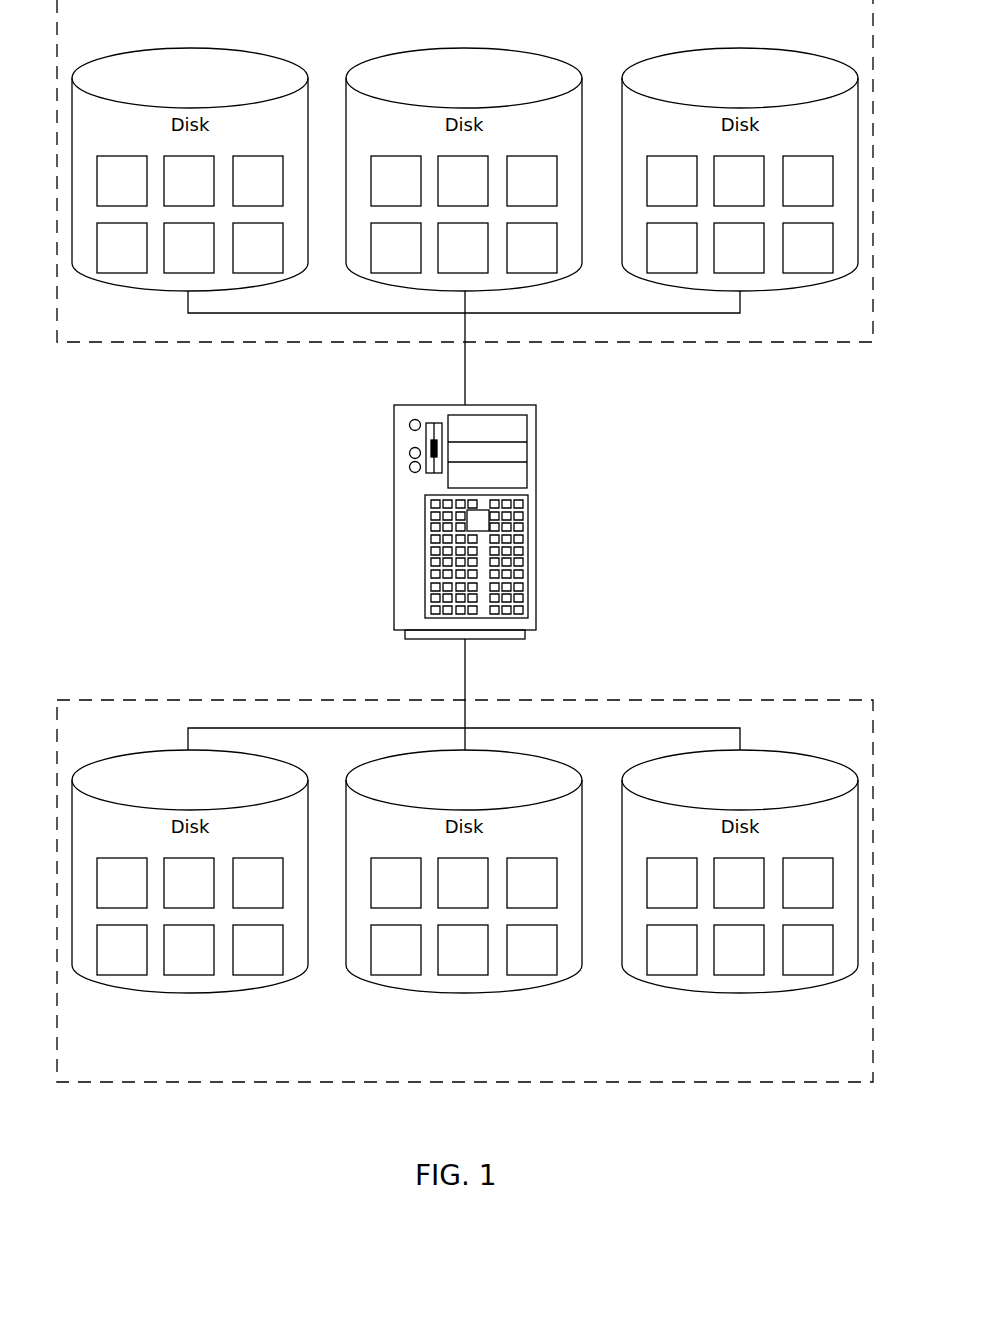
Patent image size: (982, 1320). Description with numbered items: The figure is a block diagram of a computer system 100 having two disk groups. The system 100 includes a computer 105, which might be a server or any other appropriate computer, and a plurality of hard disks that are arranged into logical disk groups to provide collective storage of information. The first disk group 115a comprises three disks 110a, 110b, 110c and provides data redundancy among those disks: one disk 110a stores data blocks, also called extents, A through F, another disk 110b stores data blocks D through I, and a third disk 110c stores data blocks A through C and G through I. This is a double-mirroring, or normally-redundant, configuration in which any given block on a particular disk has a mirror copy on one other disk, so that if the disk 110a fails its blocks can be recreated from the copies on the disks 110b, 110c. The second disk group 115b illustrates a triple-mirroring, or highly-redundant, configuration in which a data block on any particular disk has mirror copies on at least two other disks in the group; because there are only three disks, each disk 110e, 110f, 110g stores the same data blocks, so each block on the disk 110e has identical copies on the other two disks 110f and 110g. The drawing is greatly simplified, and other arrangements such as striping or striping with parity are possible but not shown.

The system 100 is at (465, 577).
The computer 105 is at (536, 520).
The disk 110a is at (187, 48).
The disk 110b is at (462, 48).
The disk 110c is at (740, 48).
The disk 110e is at (188, 992).
The disk 110f is at (465, 992).
The disk 110g is at (740, 992).
The disk group 115a is at (180, 342).
The disk group 115b is at (180, 700).